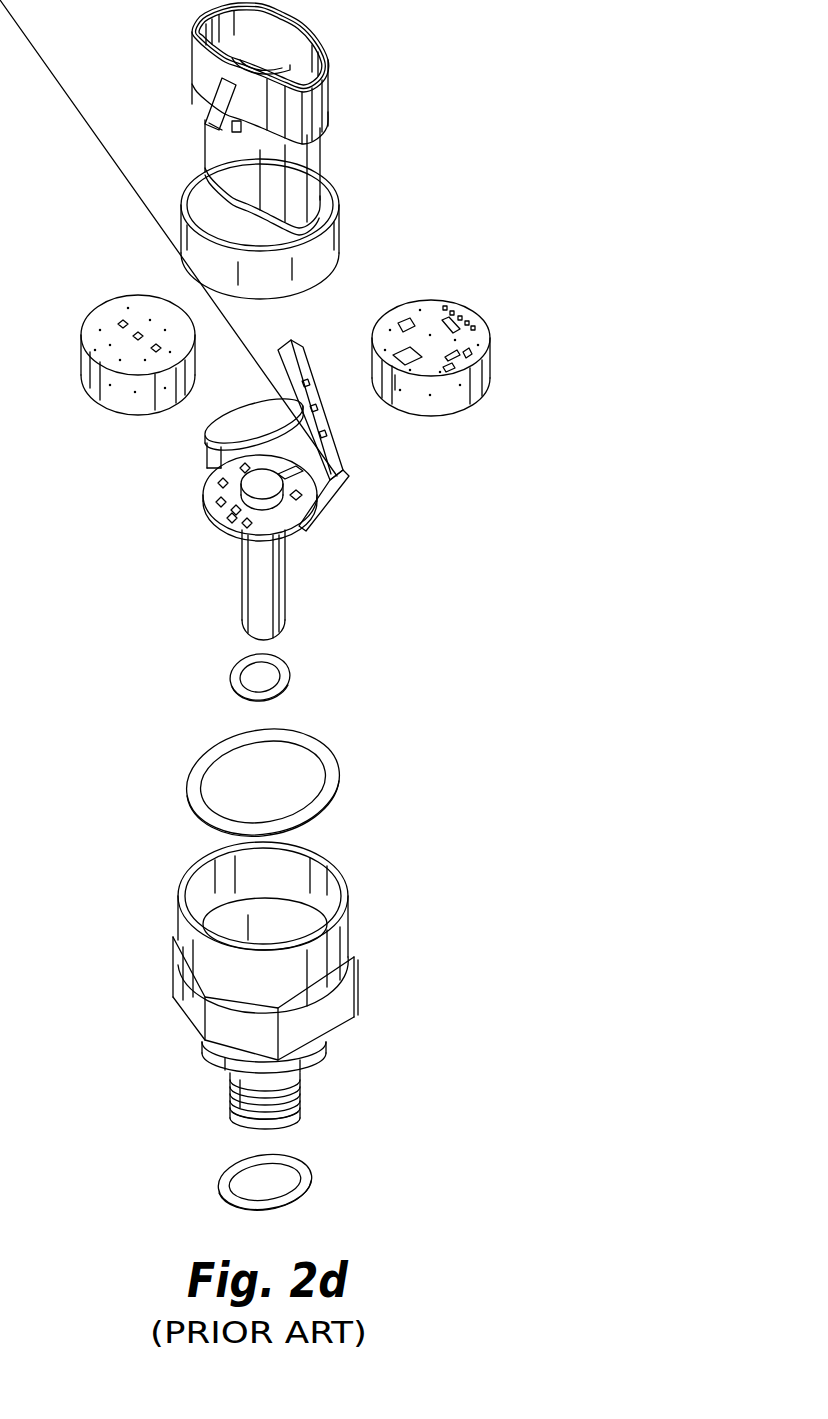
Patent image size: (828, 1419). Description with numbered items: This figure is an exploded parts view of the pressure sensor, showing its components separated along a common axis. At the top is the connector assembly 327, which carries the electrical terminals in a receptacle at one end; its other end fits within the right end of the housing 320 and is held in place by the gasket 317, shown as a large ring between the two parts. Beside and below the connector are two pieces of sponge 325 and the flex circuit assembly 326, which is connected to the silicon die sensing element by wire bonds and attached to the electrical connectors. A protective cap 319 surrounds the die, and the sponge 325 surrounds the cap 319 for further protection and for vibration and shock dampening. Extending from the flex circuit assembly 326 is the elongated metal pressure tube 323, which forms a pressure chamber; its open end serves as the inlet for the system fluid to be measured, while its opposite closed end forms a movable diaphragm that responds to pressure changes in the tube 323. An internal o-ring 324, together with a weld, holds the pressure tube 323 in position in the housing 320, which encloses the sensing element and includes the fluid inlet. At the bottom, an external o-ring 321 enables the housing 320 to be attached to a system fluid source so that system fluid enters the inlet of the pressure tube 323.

The gasket 317 is at (200, 761).
The protective cap 319 is at (266, 494).
The housing 320 is at (178, 930).
The external o-ring 321 is at (221, 1176).
The pressure tube 323 is at (242, 609).
The internal o-ring 324 is at (237, 691).
The sponge 325 is at (112, 312).
The flex circuit assembly 326 is at (200, 504).
The connector assembly 327 is at (192, 102).